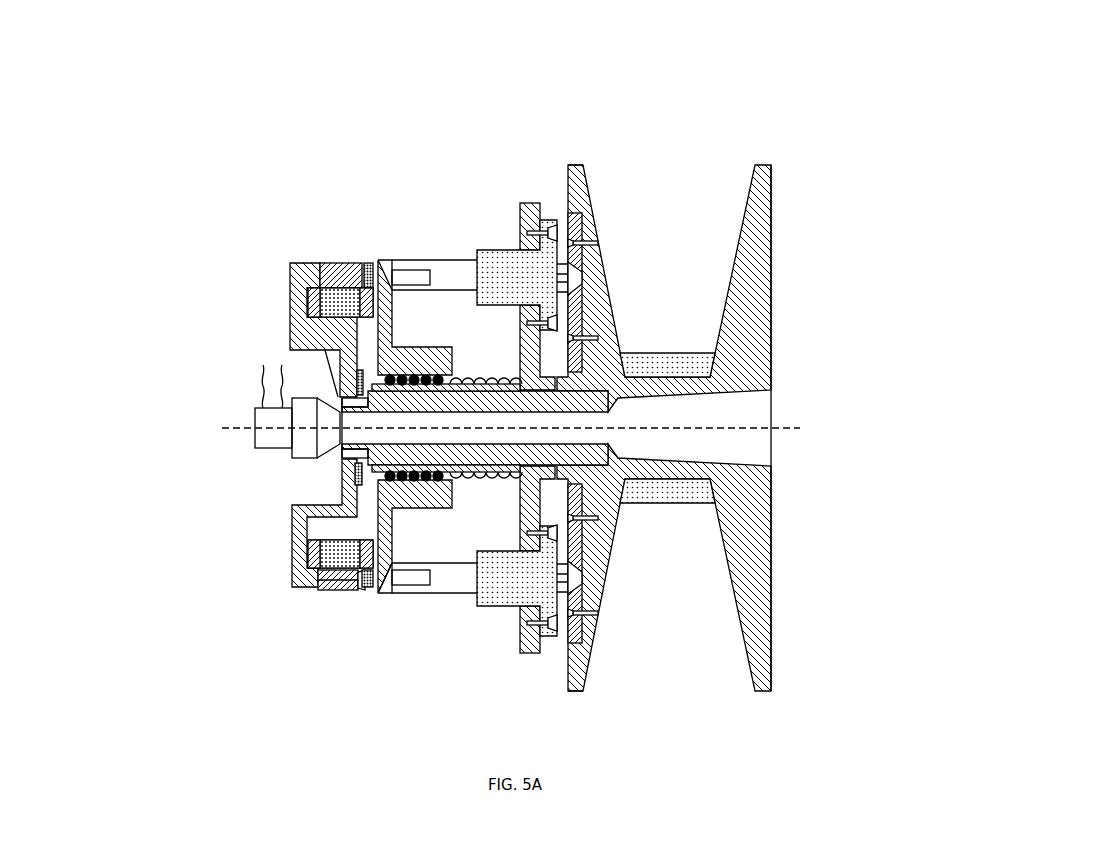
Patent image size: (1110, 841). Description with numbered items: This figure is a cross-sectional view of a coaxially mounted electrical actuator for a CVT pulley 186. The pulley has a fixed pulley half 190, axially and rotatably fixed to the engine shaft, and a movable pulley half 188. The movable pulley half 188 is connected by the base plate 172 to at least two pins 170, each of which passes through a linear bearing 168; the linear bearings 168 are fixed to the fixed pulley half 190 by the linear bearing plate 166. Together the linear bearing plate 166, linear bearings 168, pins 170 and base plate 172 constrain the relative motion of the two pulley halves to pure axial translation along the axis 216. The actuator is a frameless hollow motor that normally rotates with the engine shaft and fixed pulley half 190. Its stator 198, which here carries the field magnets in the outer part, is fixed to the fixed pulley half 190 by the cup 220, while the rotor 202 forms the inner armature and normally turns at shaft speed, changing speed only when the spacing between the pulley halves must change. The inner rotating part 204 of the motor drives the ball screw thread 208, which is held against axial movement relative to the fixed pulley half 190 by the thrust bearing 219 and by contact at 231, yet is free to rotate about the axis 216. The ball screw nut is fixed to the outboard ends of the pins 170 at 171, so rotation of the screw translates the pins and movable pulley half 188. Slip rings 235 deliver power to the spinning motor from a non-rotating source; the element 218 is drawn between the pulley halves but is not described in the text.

The linear bearing plate 166 is at (528, 197).
The linear bearings 168 is at (513, 592).
The pins 170 is at (445, 275).
The attachment point 171 is at (385, 600).
The base plate 172 is at (580, 215).
The CVT pulley 186 is at (682, 190).
The movable pulley half 188 is at (568, 157).
The fixed pulley half 190 is at (757, 247).
The stator 198 is at (328, 272).
The rotor 202 is at (335, 557).
The inner rotating part of the motor 204 is at (340, 532).
The ball screw thread 208 is at (485, 472).
The axis of rotation 216 is at (815, 428).
The damping insert 218 is at (668, 503).
The thrust bearing 219 is at (347, 478).
The cup 220 is at (292, 332).
The contact 231 is at (516, 365).
The slip rings 235 is at (270, 412).